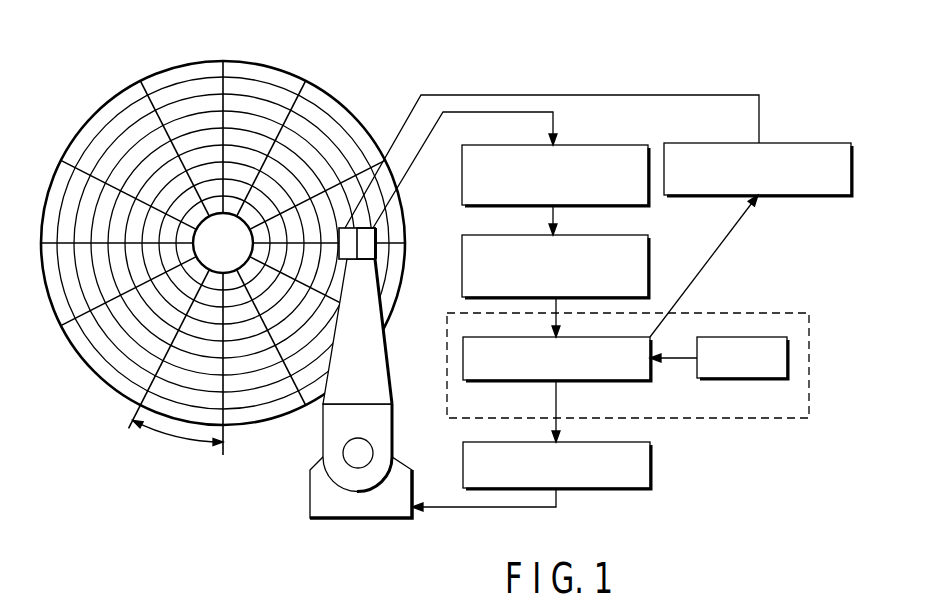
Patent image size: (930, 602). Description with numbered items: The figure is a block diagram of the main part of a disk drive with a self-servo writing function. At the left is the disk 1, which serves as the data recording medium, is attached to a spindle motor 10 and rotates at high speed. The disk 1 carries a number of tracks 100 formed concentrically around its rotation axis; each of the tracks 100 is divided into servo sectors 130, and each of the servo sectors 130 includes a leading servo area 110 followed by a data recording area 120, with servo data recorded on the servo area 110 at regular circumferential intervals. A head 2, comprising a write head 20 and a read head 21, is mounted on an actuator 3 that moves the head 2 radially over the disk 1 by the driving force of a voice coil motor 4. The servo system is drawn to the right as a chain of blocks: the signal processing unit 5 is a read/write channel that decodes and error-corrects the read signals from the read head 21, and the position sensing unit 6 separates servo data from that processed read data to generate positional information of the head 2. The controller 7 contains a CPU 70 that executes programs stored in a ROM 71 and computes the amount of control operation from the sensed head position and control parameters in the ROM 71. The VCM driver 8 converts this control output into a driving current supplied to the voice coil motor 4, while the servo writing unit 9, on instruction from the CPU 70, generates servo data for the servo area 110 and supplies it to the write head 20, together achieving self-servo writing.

The disk 1 is at (117, 80).
The tracks 100 is at (62, 305).
The spindle motor 10 is at (282, 78).
The servo area 110 is at (229, 62).
The data recording area 120 is at (178, 441).
The servo sectors 130 is at (176, 475).
The head 2 is at (360, 270).
The write head 20 is at (355, 228).
The read head 21 is at (375, 243).
The actuator 3 is at (393, 385).
The voice coil motor 4 is at (362, 503).
The signal processing unit 5 is at (602, 143).
The position sensing unit 6 is at (636, 233).
The controller 7 is at (752, 313).
The microprocessor 70 is at (610, 382).
The ROM 71 is at (745, 380).
The VCM driver 8 is at (655, 465).
The servo writing unit 9 is at (786, 143).